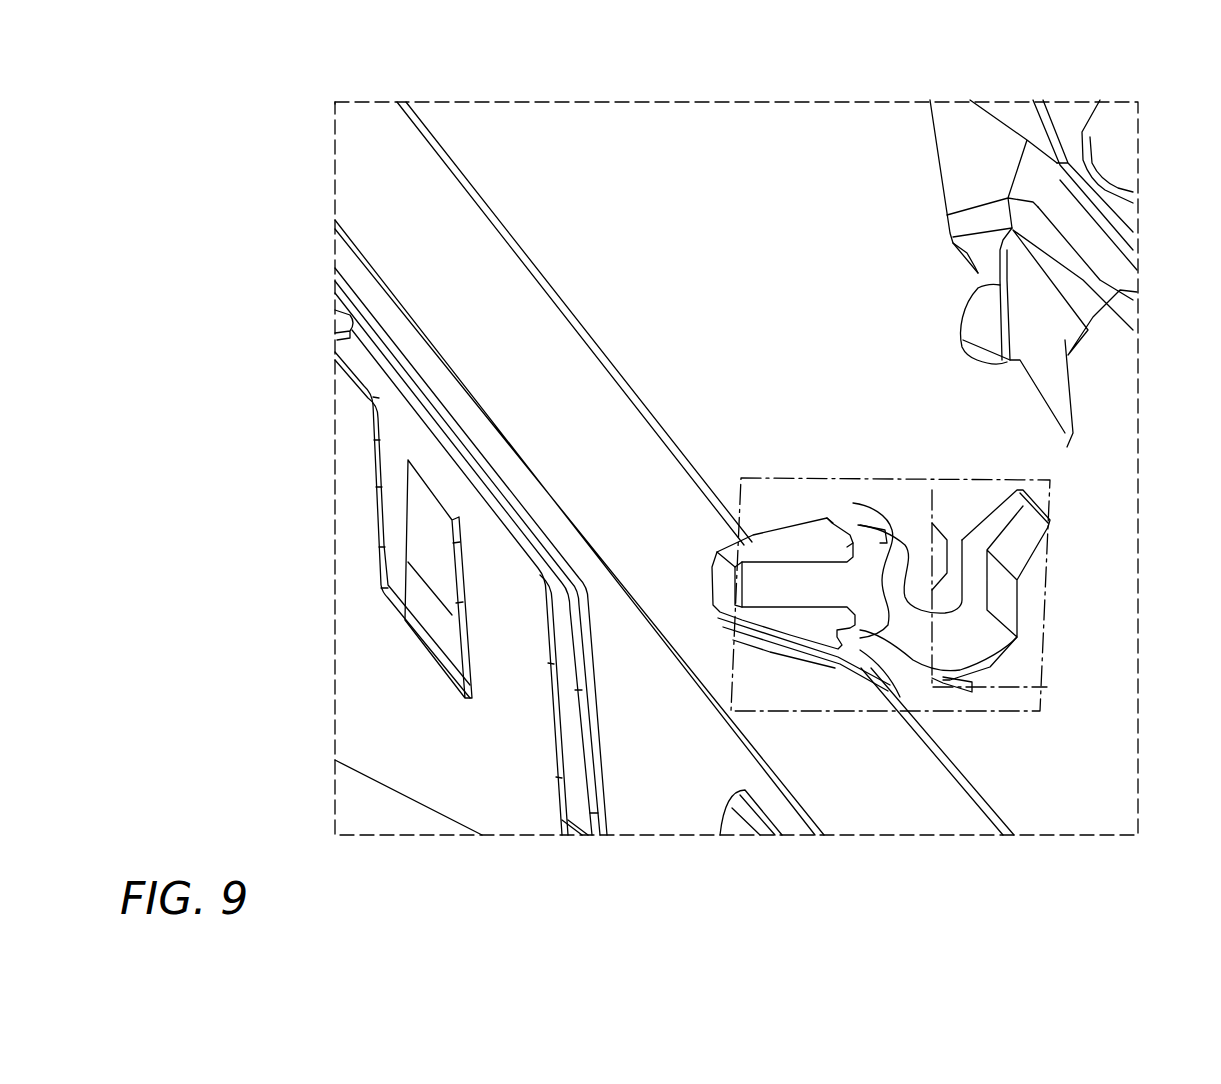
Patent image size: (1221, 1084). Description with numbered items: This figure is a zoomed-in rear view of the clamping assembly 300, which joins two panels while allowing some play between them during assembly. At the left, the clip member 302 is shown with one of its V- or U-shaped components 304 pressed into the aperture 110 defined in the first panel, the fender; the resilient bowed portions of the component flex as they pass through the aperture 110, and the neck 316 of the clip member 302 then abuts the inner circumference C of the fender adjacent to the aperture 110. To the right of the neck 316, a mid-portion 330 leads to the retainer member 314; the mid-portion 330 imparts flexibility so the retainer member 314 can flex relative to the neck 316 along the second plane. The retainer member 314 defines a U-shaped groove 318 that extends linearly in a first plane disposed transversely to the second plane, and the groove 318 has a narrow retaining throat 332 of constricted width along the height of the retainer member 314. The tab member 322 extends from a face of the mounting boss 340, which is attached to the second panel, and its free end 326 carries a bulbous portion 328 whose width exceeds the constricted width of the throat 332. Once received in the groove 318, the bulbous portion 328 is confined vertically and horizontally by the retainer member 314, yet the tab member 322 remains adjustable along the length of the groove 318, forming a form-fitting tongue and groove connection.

The clamping assembly 300 is at (1012, 770).
The clip member 302 is at (785, 515).
The V- or U-shaped component 304 is at (785, 567).
The retainer member 314 is at (960, 628).
The neck 316 is at (836, 498).
The groove 318 is at (927, 608).
The tab member 322 is at (970, 270).
The free end 326 is at (1073, 342).
The bulbous portion 328 is at (962, 308).
The mid-portion 330 is at (883, 590).
The narrow retaining throat 332 is at (910, 549).
The mounting boss 340 is at (967, 162).
The aperture 110 is at (447, 578).
The inner circumference C is at (457, 548).